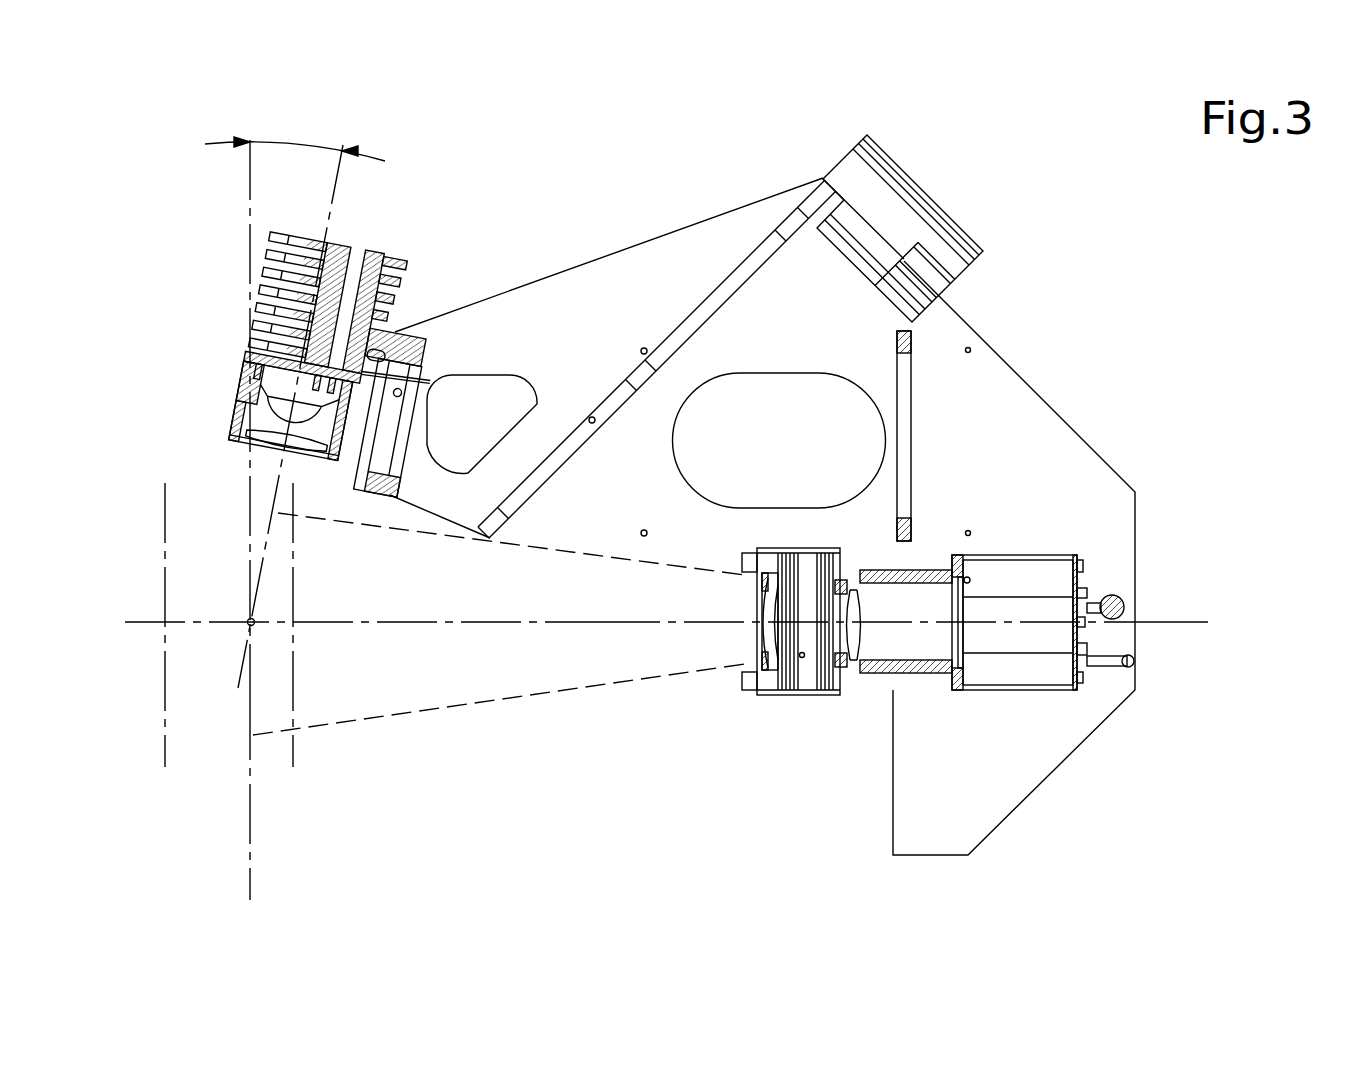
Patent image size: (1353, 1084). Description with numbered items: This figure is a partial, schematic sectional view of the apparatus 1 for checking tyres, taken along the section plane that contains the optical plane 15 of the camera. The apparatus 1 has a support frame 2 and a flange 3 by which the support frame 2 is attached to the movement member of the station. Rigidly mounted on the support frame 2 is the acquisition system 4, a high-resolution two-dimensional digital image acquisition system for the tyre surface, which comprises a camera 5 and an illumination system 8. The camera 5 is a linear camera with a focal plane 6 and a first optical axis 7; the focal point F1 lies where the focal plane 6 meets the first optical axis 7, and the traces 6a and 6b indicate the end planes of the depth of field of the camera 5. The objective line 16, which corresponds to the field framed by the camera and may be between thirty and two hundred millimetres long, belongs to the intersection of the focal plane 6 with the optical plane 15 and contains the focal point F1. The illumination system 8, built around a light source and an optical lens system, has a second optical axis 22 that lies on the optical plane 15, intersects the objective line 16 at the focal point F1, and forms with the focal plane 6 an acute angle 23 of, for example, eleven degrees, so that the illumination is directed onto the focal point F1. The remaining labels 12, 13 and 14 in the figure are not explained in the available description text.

The apparatus 1 is at (1162, 322).
The support frame 2 is at (1033, 462).
The flange 3 is at (910, 205).
The acquisition system 4 is at (1108, 548).
The camera 5 is at (924, 702).
The focal plane 6 is at (250, 867).
The trace of end plane of depth of field 6a is at (293, 748).
The trace of end plane of depth of field 6b is at (165, 752).
The first optical axis 7 is at (550, 622).
The illumination system 8 is at (212, 304).
The observation beam path 12 is at (647, 622).
The first region 13 is at (142, 475).
The second region 14 is at (332, 819).
The optical plane 15 is at (465, 672).
The objective line 16 is at (252, 545).
The second optical axis 22 is at (282, 480).
The acute angle 23 is at (300, 145).
The focal point F1 is at (250, 624).